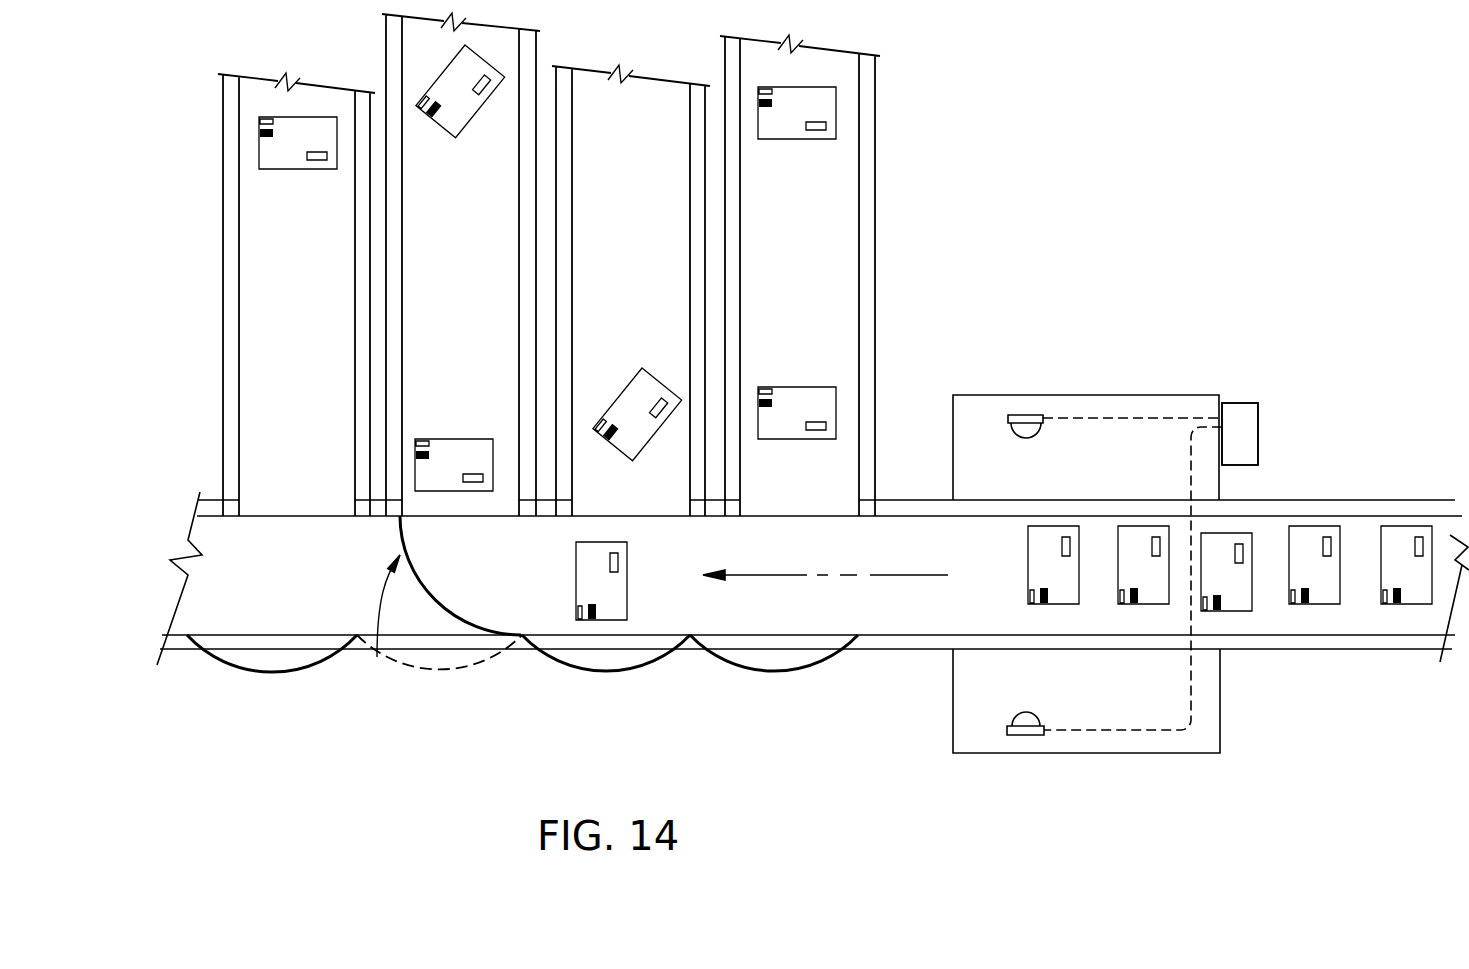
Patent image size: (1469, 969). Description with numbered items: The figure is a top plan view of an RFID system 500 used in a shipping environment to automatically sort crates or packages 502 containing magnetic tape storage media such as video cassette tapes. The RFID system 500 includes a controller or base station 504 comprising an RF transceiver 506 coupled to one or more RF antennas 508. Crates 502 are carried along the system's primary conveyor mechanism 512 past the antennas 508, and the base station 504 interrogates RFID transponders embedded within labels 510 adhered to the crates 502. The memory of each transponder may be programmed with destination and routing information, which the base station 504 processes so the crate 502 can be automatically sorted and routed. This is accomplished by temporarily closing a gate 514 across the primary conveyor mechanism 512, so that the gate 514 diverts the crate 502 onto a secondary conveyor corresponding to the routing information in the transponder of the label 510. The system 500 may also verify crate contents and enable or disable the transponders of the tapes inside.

The RFID system 500 is at (1077, 167).
The crate 502 is at (1235, 595).
The base station 504 is at (1239, 408).
The RF transceiver 506 is at (1248, 437).
The RF antenna 508 is at (1025, 418).
The label 510 is at (1297, 597).
The primary conveyor mechanism 512 is at (903, 625).
The gate 514 is at (432, 605).